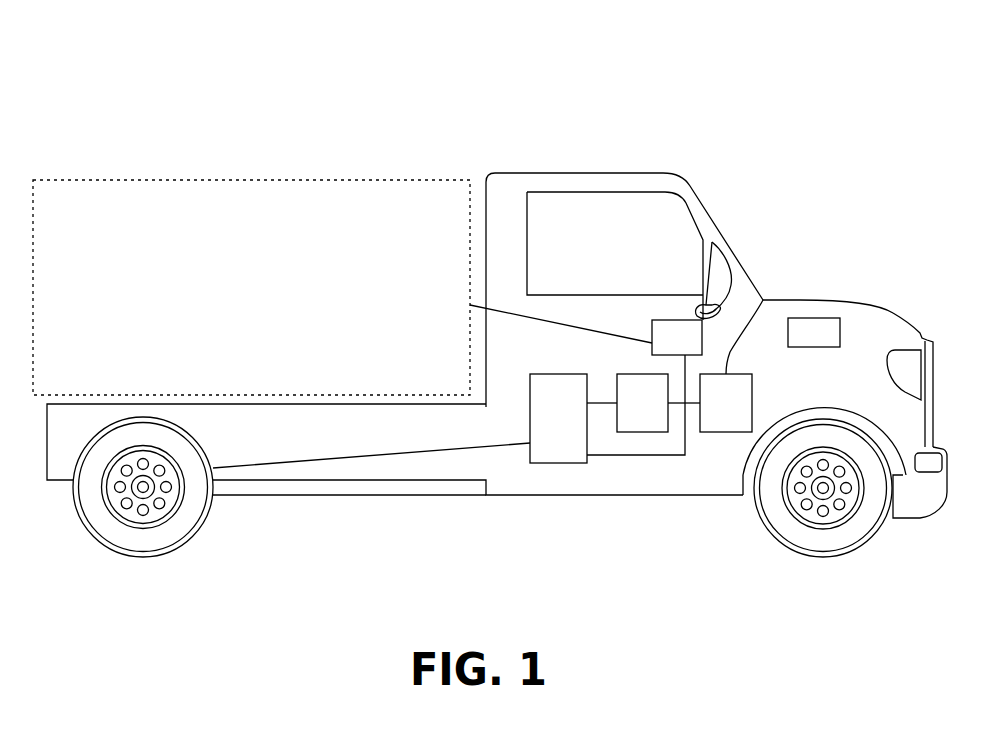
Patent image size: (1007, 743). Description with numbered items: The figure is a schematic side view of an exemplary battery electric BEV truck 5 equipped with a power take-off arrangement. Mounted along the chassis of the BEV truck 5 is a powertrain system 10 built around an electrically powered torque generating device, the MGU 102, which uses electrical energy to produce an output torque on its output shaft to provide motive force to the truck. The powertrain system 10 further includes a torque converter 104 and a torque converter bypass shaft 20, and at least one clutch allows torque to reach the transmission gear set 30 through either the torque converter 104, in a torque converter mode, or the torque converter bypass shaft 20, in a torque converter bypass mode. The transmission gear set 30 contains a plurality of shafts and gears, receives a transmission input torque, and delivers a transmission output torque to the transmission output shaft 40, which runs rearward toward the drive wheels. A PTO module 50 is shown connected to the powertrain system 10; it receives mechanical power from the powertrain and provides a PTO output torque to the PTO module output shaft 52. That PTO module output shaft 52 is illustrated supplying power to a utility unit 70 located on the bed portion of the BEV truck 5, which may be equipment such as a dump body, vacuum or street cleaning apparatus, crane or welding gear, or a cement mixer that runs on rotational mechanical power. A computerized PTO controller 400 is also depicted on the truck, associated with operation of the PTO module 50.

The BEV truck 5 is at (770, 57).
The powertrain system 10 is at (677, 457).
The torque converter bypass shaft 20 is at (652, 457).
The transmission gear set 30 is at (558, 463).
The transmission output shaft 40 is at (320, 460).
The PTO module 50 is at (667, 320).
The PTO module output shaft 52 is at (550, 320).
The utility unit 70 is at (200, 180).
The MGU 102 is at (727, 374).
The torque converter 104 is at (640, 432).
The computerized PTO controller 400 is at (822, 318).